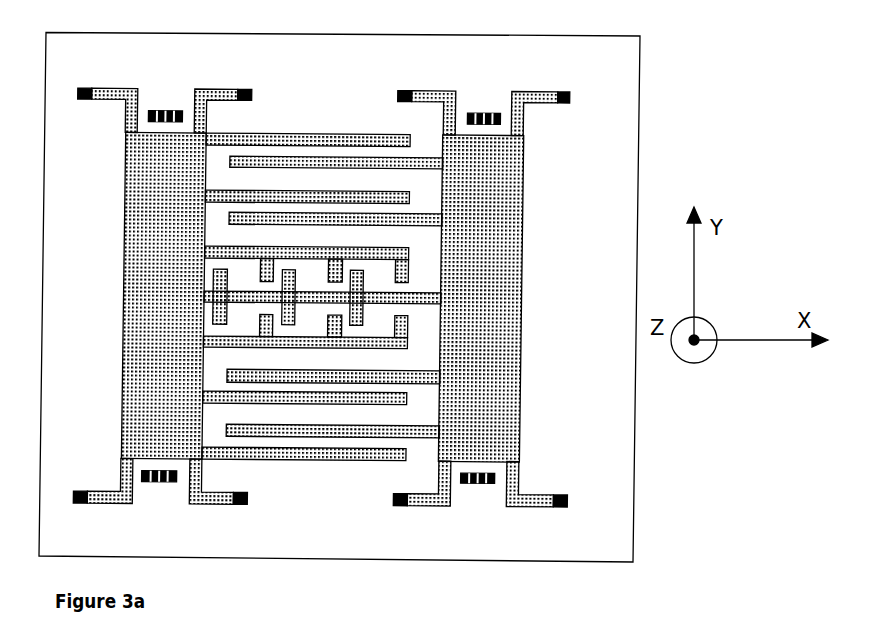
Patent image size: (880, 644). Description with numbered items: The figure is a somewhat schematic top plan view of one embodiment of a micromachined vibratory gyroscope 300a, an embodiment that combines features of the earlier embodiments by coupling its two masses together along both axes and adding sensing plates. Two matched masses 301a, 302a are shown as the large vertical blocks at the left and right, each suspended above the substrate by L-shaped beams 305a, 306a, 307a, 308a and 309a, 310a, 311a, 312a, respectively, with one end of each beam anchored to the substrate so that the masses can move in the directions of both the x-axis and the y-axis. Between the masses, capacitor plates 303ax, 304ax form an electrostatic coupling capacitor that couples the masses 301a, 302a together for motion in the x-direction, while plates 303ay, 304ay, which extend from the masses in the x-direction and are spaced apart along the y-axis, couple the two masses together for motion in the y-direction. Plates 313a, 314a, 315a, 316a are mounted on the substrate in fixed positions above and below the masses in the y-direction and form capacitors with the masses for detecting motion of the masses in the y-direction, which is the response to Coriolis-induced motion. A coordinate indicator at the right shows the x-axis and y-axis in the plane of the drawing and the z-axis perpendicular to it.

The micromachined inertial sensor 300a is at (318, 296).
The mass 301a is at (135, 292).
The mass 302a is at (500, 296).
The capacitor plate 303ax is at (270, 263).
The capacitor plate 304ax is at (258, 315).
The capacitor plate 303ay is at (382, 438).
The capacitor plate 304ay is at (220, 448).
The anchor 305a is at (125, 88).
The anchor 306a is at (237, 88).
The anchor 307a is at (110, 501).
The anchor 308a is at (222, 502).
The anchor 309a is at (445, 91).
The anchor 310a is at (558, 91).
The anchor 311a is at (428, 505).
The anchor 312a is at (542, 505).
The plate 313a is at (168, 111).
The plate 314a is at (490, 113).
The plate 315a is at (153, 482).
The plate 316a is at (470, 483).